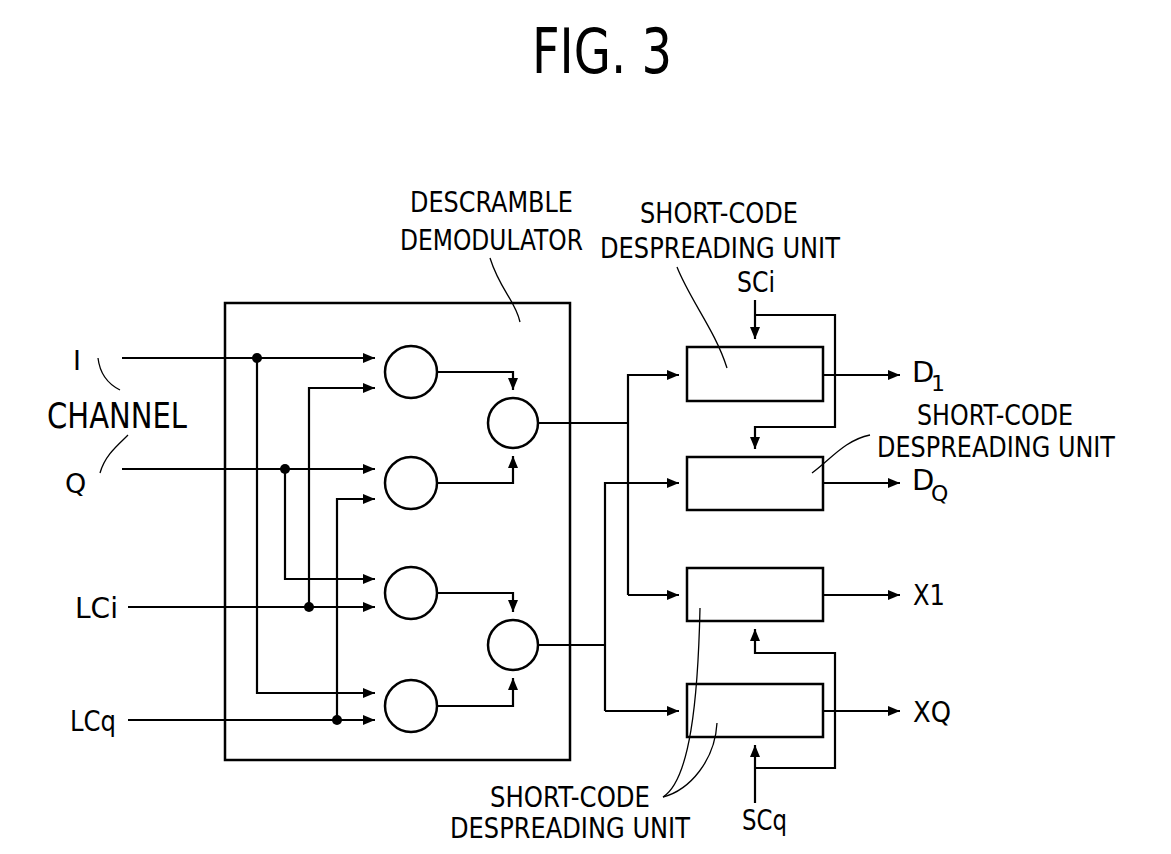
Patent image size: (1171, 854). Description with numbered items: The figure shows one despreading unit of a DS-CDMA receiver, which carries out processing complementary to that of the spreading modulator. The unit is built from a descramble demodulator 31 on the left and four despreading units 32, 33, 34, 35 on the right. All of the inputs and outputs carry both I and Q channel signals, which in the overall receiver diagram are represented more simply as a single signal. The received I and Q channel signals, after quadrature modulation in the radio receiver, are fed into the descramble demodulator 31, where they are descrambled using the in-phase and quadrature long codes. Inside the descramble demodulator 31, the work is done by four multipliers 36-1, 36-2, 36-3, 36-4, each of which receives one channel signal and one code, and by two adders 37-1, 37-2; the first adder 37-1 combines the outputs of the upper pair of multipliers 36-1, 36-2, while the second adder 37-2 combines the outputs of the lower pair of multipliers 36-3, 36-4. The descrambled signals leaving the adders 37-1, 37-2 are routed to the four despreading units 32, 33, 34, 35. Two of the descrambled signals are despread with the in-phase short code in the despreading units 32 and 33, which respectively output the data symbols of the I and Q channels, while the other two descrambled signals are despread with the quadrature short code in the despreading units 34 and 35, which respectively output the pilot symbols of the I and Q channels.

The descramble demodulator 31 is at (256, 282).
The despreading unit 32 is at (737, 365).
The despreading unit 33 is at (737, 474).
The despreading unit 34 is at (737, 587).
The despreading unit 35 is at (737, 703).
The multiplier 36-1 is at (411, 354).
The multiplier 36-2 is at (411, 465).
The multiplier 36-3 is at (411, 575).
The multiplier 36-4 is at (411, 686).
The adder 37-1 is at (516, 411).
The adder 37-2 is at (516, 632).